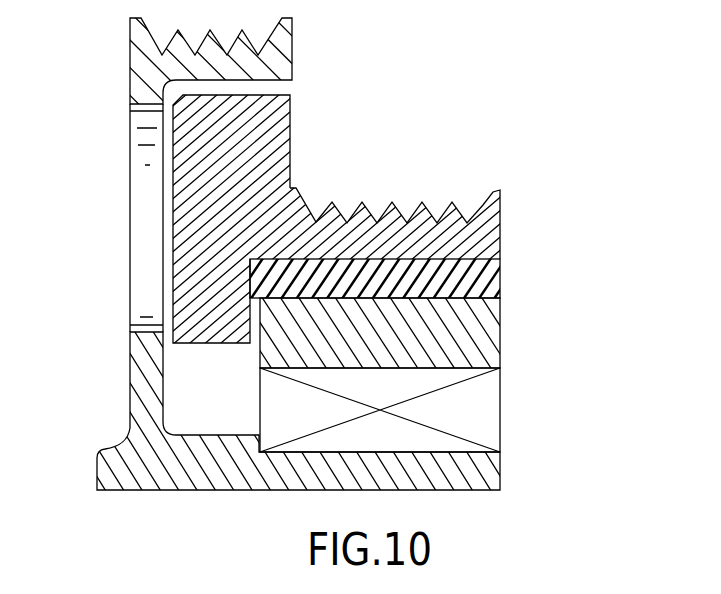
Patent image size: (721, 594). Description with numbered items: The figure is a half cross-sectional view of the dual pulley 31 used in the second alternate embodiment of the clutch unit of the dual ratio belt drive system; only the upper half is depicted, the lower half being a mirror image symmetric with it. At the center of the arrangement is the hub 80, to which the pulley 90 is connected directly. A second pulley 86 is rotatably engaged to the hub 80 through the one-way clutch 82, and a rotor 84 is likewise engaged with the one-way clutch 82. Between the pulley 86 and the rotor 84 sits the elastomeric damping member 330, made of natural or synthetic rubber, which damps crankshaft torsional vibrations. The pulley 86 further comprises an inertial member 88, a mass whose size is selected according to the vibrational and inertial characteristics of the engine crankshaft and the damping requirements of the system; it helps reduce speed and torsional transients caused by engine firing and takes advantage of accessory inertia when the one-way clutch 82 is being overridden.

The dual pulley 31 is at (472, 110).
The hub 80 is at (180, 452).
The one-way clutch 82 is at (287, 396).
The rotor 84 is at (457, 337).
The pulley 86 is at (488, 234).
The inertial member 88 is at (248, 176).
The pulley 90 is at (150, 58).
The elastomeric damping member 330 is at (485, 285).